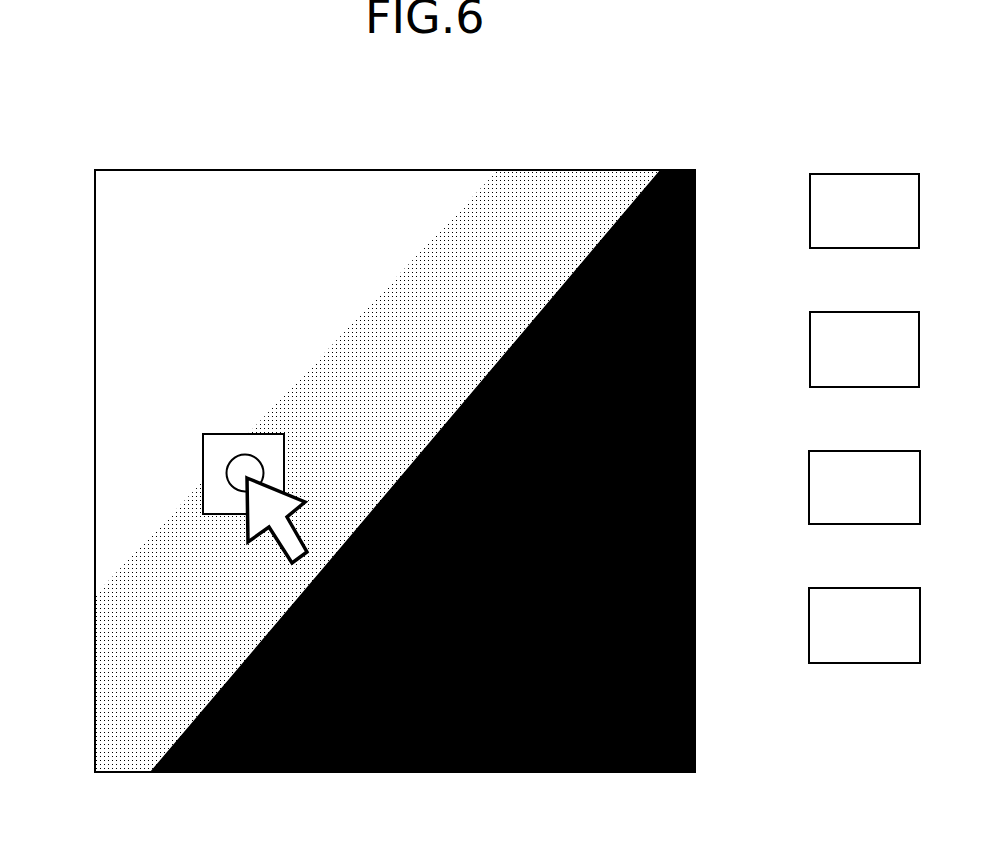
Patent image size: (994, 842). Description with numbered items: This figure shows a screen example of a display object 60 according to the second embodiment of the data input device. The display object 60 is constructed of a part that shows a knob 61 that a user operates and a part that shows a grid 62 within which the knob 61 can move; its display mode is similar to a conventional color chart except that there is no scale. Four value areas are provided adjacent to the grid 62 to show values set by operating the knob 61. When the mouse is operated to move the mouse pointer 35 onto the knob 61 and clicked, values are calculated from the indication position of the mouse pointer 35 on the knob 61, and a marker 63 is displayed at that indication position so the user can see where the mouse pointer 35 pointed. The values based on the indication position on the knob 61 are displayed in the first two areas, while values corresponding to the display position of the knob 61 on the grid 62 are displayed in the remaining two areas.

The display object 60 is at (555, 110).
The grid 62 is at (212, 170).
The knob 61 is at (223, 433).
The marker 63 is at (227, 479).
The mouse pointer 35 is at (282, 550).